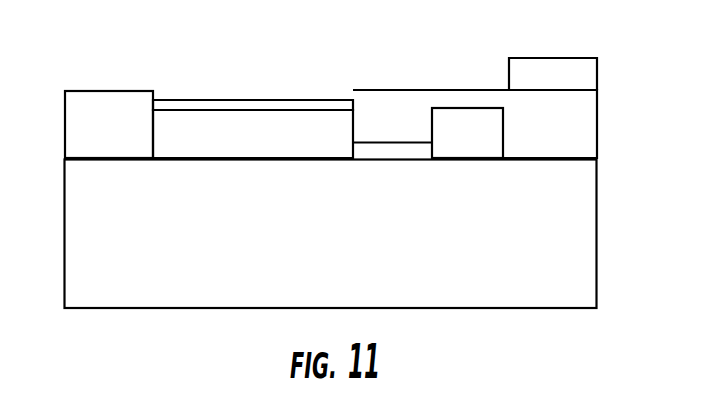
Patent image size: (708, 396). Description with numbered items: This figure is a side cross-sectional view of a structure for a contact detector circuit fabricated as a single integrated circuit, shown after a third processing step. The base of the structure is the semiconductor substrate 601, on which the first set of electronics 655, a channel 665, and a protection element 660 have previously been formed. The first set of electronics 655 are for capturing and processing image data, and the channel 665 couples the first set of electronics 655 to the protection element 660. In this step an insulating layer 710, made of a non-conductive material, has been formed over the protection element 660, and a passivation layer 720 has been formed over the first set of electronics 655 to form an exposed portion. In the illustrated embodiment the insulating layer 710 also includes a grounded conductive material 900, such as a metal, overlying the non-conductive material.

The semiconductor substrate 601 is at (339, 250).
The insulating layer 710 is at (128, 136).
The first set of electronics 655 is at (274, 150).
The passivation layer 720 is at (218, 107).
The channel 665 is at (385, 150).
The protection element 660 is at (486, 147).
The grounded conductive material 900 is at (558, 70).